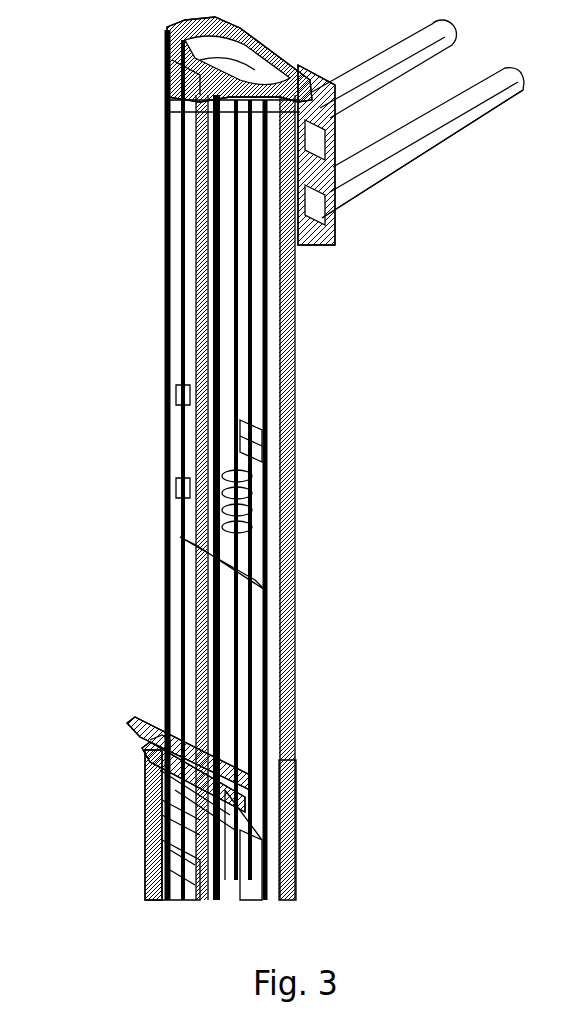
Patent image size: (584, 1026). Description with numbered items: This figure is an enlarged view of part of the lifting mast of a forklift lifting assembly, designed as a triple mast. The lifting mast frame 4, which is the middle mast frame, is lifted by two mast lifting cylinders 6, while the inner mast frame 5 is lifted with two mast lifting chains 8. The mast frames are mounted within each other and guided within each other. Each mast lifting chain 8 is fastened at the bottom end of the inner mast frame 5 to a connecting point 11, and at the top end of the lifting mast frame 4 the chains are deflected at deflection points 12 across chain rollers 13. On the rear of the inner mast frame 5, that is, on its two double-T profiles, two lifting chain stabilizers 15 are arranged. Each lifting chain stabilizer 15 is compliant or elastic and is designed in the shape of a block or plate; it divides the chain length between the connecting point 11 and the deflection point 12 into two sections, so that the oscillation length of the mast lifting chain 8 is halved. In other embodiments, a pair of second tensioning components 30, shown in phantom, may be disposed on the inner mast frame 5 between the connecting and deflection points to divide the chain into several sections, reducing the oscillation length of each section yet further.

The lifting mast frame 4 is at (280, 799).
The inner mast frame 5 is at (275, 601).
The mast lifting cylinder 6 is at (263, 870).
The mast lifting chain 8 is at (147, 876).
The connecting point 11 is at (150, 821).
The deflection point 12 is at (222, 730).
The chain roller 13 is at (288, 728).
The lifting chain stabilizer 15 is at (257, 520).
The second tensioning component 30 is at (258, 435).